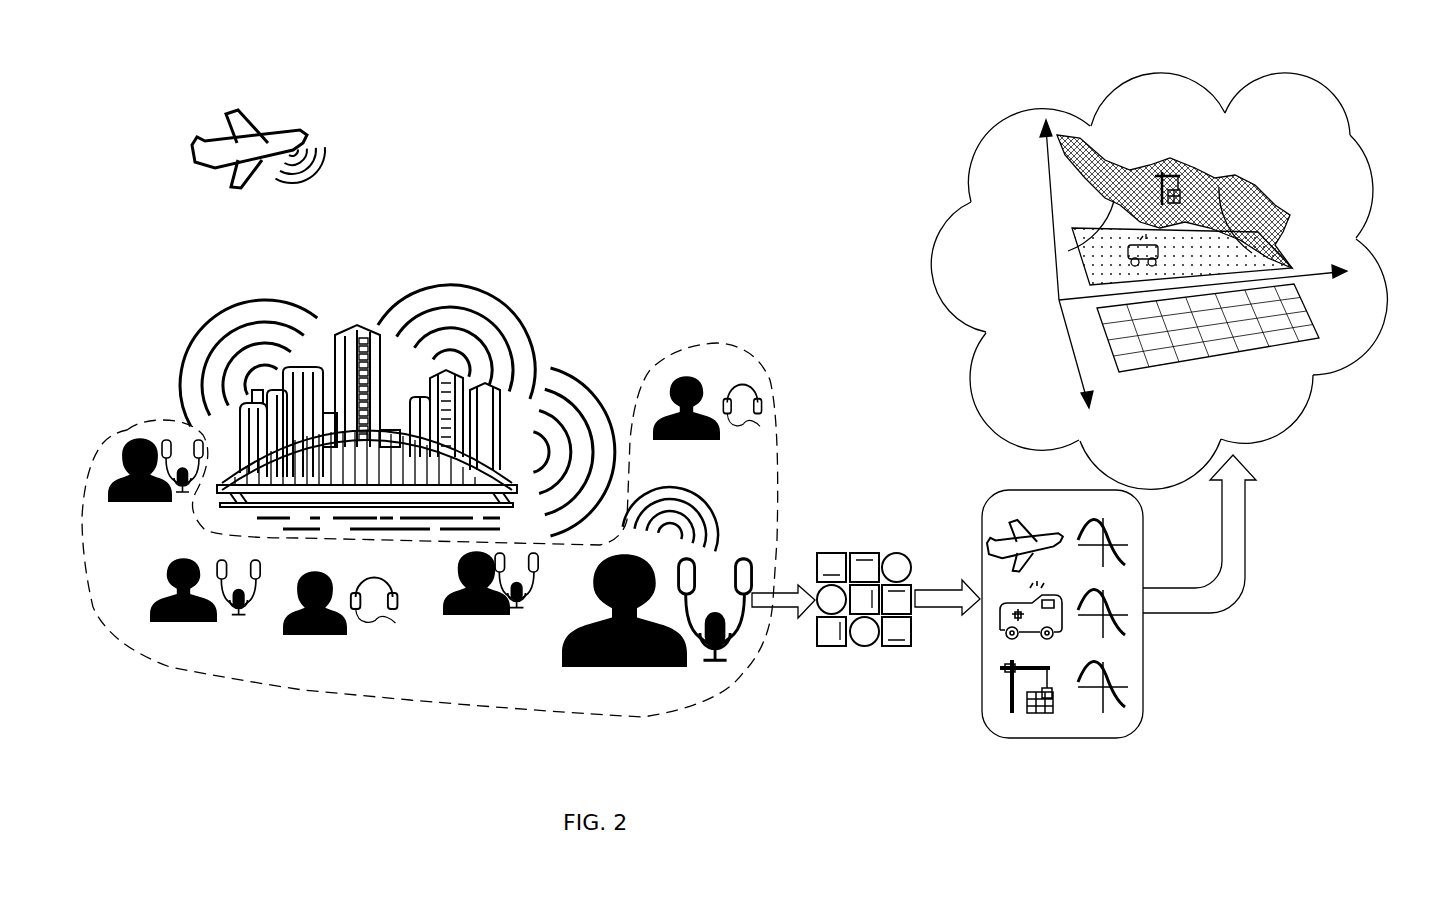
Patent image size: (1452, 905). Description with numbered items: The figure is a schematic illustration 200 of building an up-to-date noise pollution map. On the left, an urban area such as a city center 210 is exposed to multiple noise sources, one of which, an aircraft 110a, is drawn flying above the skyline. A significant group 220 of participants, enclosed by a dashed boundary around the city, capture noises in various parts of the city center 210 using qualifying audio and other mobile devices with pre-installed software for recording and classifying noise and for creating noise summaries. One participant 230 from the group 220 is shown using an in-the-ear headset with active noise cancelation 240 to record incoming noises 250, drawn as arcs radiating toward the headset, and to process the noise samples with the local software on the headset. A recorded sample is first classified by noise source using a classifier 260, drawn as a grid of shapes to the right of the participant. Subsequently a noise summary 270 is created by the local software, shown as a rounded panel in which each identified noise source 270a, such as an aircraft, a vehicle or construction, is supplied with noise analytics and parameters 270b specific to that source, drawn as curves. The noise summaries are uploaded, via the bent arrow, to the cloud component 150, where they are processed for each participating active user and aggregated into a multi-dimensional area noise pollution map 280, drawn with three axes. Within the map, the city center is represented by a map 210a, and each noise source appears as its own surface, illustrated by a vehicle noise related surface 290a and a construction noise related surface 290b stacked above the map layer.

The aircraft 110a is at (220, 143).
The city center 210 is at (360, 327).
The group of participants 220 is at (268, 685).
The participant 230 is at (560, 647).
The in-the-ear headset with active noise cancelation 240 is at (727, 640).
The incoming noises 250 is at (717, 503).
The classifier 260 is at (848, 553).
The noise summary 270 is at (1072, 622).
The identified noise source 270a is at (1007, 690).
The noise analytics and parameters 270b is at (1117, 693).
The multi-dimensional area noise pollution map 280 is at (1060, 285).
The construction noise related surface 290b is at (1242, 190).
The vehicle noise related surface 290a is at (1300, 260).
The map 210a is at (1247, 361).
The cloud component 150 is at (965, 177).
The schematic illustration 200 is at (1446, 133).